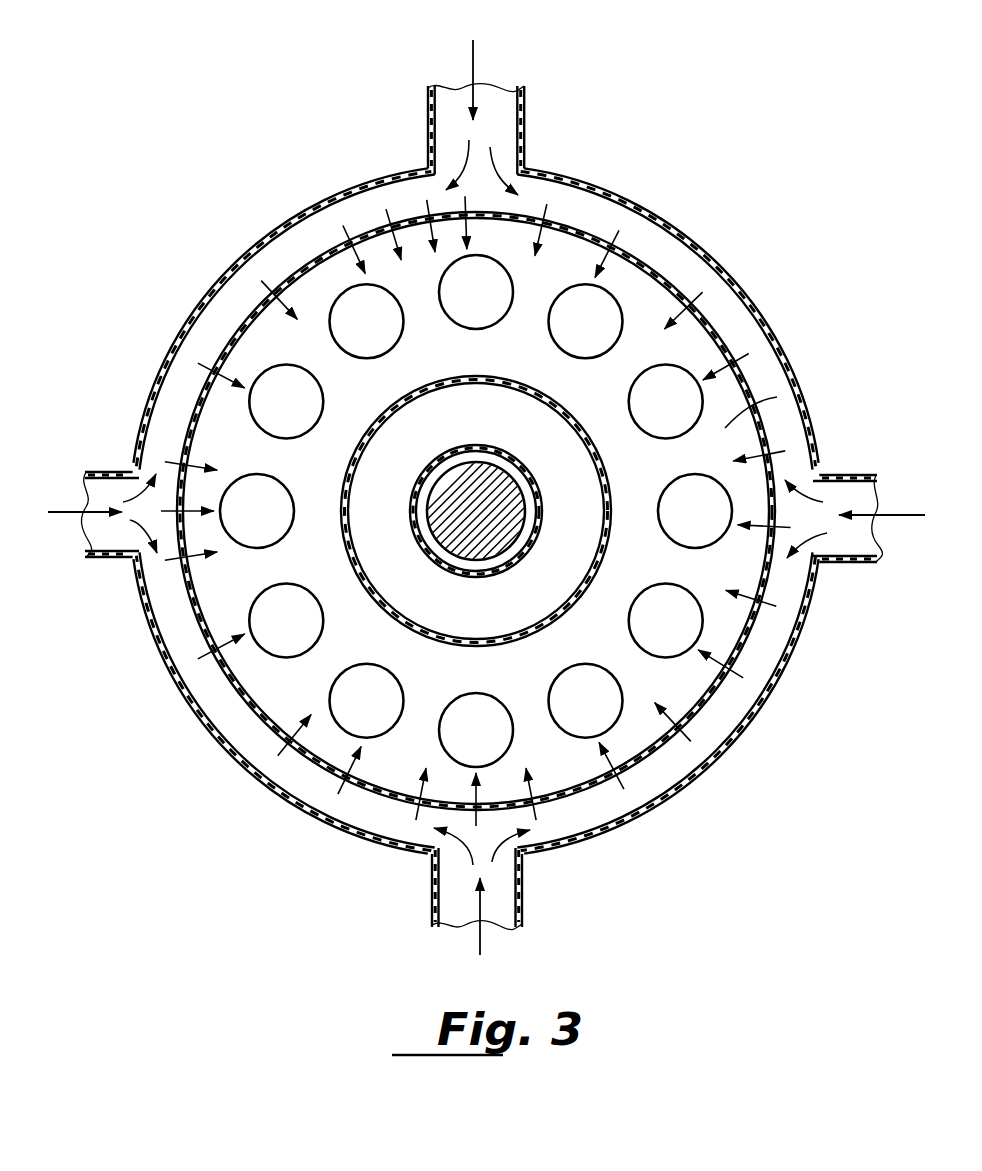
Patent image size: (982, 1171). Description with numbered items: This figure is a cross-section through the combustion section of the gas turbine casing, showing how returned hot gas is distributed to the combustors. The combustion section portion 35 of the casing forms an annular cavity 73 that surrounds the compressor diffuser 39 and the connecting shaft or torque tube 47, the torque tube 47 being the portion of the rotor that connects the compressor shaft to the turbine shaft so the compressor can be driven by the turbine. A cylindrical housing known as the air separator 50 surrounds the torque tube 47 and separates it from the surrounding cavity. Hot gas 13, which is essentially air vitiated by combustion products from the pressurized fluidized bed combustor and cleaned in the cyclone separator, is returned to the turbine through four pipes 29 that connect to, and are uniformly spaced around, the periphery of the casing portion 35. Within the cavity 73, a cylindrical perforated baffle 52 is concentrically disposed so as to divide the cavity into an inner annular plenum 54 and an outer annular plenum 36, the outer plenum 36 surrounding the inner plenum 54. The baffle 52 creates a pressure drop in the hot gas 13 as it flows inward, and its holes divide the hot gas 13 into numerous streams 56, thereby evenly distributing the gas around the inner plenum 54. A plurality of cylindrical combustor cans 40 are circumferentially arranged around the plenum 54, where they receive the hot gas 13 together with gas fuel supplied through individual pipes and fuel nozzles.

The hot gas 13 is at (474, 58).
The pipes 29 is at (522, 122).
The combustion section portion of the casing 35 is at (666, 218).
The outer annular plenum 36 is at (307, 256).
The compressor diffuser 39 is at (606, 494).
The combustor cans 40 is at (355, 357).
The torque tube 47 is at (455, 505).
The air separator 50 is at (533, 497).
The cylindrical perforated baffle 52 is at (745, 385).
The inner annular plenum 54 is at (524, 364).
The streams 56 is at (205, 356).
The annular cavity 73 is at (777, 397).